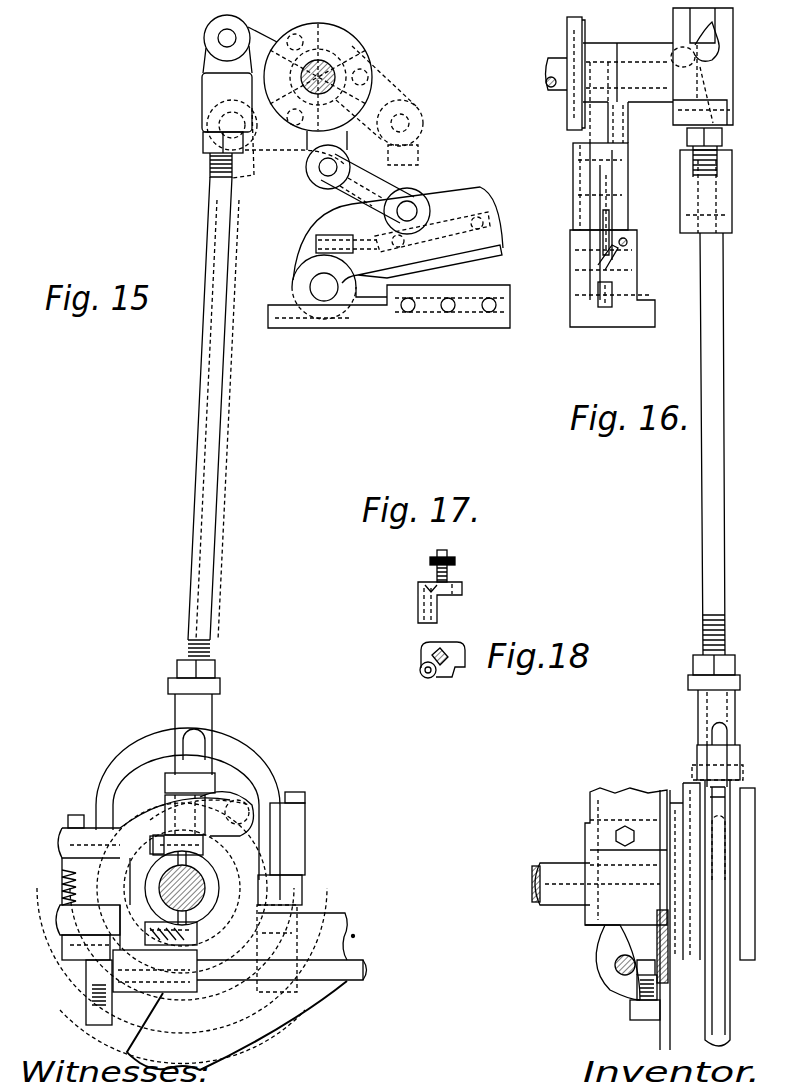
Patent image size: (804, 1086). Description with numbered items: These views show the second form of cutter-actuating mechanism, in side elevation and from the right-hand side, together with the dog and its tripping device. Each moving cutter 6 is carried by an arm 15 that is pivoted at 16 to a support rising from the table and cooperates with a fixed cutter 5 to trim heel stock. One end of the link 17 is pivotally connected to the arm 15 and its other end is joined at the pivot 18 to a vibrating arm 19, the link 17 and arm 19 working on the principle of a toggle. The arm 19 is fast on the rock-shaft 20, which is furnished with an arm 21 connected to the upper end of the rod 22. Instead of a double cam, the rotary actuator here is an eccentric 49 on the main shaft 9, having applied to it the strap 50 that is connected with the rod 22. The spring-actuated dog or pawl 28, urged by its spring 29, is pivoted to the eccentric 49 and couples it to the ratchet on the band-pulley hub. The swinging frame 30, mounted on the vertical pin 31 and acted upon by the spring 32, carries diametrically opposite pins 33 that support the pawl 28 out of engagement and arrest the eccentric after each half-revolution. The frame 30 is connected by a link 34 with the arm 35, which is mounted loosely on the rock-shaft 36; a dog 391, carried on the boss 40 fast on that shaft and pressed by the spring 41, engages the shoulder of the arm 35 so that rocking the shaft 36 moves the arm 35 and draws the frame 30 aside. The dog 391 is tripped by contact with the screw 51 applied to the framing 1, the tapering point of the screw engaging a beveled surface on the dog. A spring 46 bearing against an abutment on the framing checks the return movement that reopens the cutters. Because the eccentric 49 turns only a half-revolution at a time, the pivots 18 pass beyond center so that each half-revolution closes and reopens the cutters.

In FIG. 15, the framing 1 is at (125, 1052).
In FIG. 16, the framing 1 is at (660, 1042).
In FIG. 15, the fixed cutter 5 is at (475, 293).
In FIG. 16, the fixed cutter 5 is at (615, 290).
In FIG. 15, the moving cutter 6 is at (478, 257).
In FIG. 16, the moving cutter 6 is at (600, 275).
In FIG. 15, the main shaft 9 is at (207, 875).
In FIG. 16, the main shaft 9 is at (545, 862).
In FIG. 15, the arm 15 is at (340, 224).
In FIG. 16, the arm 15 is at (600, 205).
In FIG. 15, the pivot 16 is at (323, 285).
In FIG. 16, the pivot 16 is at (630, 262).
In FIG. 15, the link 17 is at (360, 178).
In FIG. 16, the link 17 is at (575, 190).
In FIG. 15, the pivot 18 is at (330, 168).
In FIG. 15, the vibrating arm 19 is at (313, 144).
In FIG. 16, the vibrating arm 19 is at (603, 125).
In FIG. 15, the rock-shaft 20 is at (334, 72).
In FIG. 16, the rock-shaft 20 is at (555, 58).
In FIG. 15, the arm 21 is at (260, 53).
In FIG. 16, the arm 21 is at (712, 24).
In FIG. 15, the rod 22 is at (195, 420).
In FIG. 16, the rod 22 is at (712, 416).
In FIG. 15, the dog or pawl 28 is at (220, 790).
In FIG. 15, the spring 29 is at (233, 798).
In FIG. 15, the swinging frame 30 is at (97, 835).
In FIG. 15, the vertical pin 31 is at (72, 958).
In FIG. 15, the spring 32 is at (62, 892).
In FIG. 15, the pin 33 is at (167, 805).
In FIG. 16, the pin 33 is at (668, 980).
In FIG. 16, the link 34 is at (642, 885).
In FIG. 16, the arm 35 is at (585, 887).
In FIG. 15, the rock-shaft 36 is at (362, 960).
In FIG. 16, the rock-shaft 36 is at (640, 978).
In FIG. 16, the boss 40 is at (648, 1015).
In FIG. 16, the spring 41 is at (640, 1005).
In FIG. 15, the spring 46 is at (86, 1015).
In FIG. 15, the eccentric 49 is at (228, 770).
In FIG. 15, the strap 50 is at (133, 745).
In FIG. 16, the strap 50 is at (698, 712).
In FIG. 16, the screw 51 is at (640, 962).
In FIG. 17, the screw 51 is at (437, 574).
In FIG. 16, the dog 391 is at (618, 960).
In FIG. 17, the dog 391 is at (418, 592).
In FIG. 18, the dog 391 is at (421, 655).